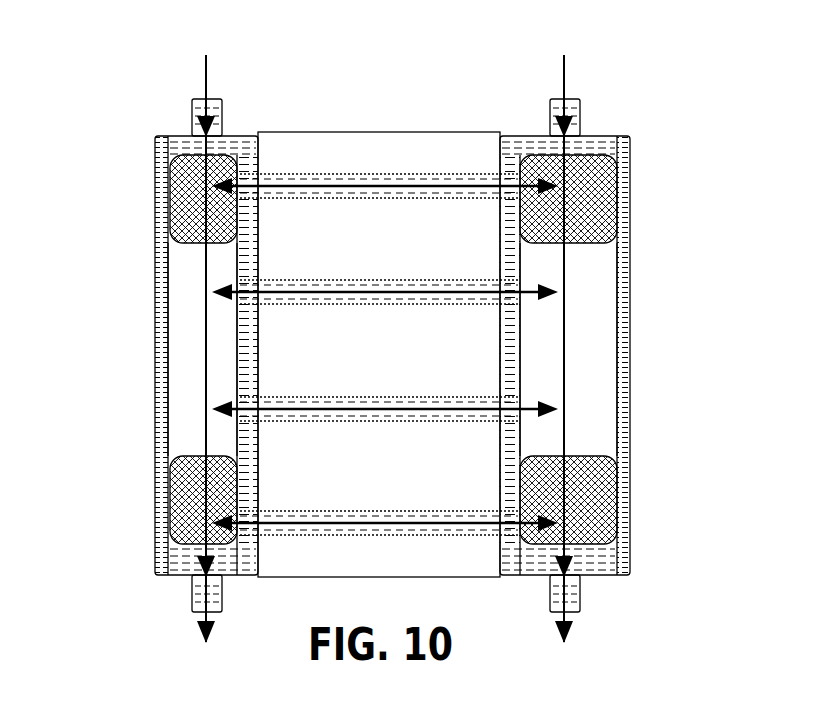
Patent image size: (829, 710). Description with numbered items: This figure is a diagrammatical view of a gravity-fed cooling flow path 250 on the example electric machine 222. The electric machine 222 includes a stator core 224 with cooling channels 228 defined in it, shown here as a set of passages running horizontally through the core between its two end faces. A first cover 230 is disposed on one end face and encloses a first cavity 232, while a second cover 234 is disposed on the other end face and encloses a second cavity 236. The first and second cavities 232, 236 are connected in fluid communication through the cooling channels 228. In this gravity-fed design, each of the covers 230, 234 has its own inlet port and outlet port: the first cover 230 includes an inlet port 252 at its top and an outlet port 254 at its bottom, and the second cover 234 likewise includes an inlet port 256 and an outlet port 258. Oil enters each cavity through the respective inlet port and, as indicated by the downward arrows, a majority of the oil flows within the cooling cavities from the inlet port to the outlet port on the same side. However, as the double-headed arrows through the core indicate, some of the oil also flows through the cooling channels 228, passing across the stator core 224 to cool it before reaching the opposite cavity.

The electric machine 222 is at (460, 48).
The stator core 224 is at (443, 157).
The cooling channels 228 is at (372, 178).
The first cover 230 is at (155, 173).
The first cavity 232 is at (180, 297).
The second cover 234 is at (630, 158).
The second cavity 236 is at (608, 289).
The flow path 250 is at (567, 265).
The inlet port 252 is at (192, 118).
The outlet port 254 is at (192, 592).
The inlet port 256 is at (580, 118).
The outlet port 258 is at (580, 592).